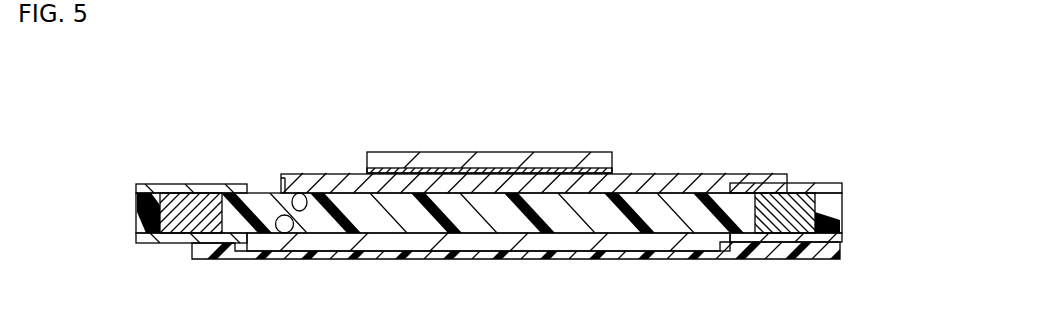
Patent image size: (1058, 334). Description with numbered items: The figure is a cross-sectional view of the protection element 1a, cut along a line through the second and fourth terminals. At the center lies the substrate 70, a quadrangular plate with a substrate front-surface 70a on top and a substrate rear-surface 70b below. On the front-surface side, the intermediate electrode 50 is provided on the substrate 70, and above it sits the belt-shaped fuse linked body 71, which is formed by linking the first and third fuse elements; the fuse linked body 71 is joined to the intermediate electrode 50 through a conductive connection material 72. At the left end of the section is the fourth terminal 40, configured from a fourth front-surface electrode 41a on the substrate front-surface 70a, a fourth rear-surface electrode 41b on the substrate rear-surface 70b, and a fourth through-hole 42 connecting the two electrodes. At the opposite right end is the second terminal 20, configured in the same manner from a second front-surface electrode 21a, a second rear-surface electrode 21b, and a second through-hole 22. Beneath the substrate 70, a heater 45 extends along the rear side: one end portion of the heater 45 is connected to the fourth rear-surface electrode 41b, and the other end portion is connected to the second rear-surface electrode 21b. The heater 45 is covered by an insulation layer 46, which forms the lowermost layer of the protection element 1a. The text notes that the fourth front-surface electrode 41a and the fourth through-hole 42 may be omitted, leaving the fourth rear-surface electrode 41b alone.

The protection element 1a is at (785, 118).
The second terminal 20 is at (820, 203).
The second front-surface electrode 21a is at (830, 182).
The second rear-surface electrode 21b is at (822, 242).
The second through-hole 22 is at (810, 214).
The fourth terminal 40 is at (155, 180).
The fourth front-surface electrode 41a is at (140, 188).
The fourth rear-surface electrode 41b is at (147, 236).
The fourth through-hole 42 is at (165, 212).
The heater 45 is at (540, 237).
The insulation layer 46 is at (417, 256).
The intermediate electrode 50 is at (698, 173).
The substrate 70 is at (855, 197).
The substrate front-surface 70a is at (295, 201).
The substrate rear-surface 70b is at (285, 223).
The fuse linked body 71 is at (487, 152).
The conductive connection material 72 is at (555, 170).